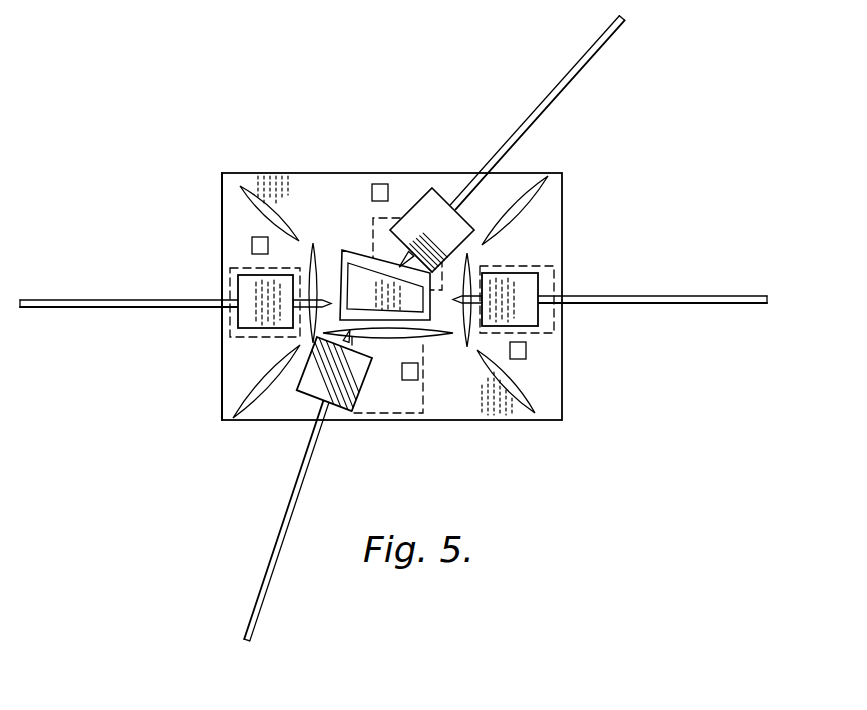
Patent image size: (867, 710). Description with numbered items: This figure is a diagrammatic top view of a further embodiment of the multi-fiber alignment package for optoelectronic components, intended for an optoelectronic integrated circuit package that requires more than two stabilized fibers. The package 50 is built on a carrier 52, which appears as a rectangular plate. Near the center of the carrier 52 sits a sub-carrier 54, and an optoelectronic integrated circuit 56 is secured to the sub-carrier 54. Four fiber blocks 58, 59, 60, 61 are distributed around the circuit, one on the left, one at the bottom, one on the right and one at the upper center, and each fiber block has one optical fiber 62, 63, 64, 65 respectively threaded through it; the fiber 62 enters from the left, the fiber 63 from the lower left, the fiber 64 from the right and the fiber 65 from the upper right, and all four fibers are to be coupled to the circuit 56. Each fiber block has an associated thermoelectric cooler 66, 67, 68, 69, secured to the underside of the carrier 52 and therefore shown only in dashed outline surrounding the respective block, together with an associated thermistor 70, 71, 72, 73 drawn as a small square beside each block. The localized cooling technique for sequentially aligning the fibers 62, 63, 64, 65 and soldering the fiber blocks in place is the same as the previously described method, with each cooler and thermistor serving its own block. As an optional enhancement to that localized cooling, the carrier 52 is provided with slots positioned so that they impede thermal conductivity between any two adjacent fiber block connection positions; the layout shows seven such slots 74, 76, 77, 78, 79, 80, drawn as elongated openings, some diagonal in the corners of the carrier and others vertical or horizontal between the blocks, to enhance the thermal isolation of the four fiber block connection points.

The package 50 is at (310, 156).
The carrier 52 is at (232, 229).
The sub-carrier 54 is at (368, 256).
The optoelectronic integrated circuit 56 is at (346, 262).
The fiber block 58 is at (236, 334).
The fiber block 59 is at (300, 412).
The fiber block 60 is at (540, 313).
The fiber block 61 is at (423, 213).
The optical fiber 62 is at (107, 298).
The optical fiber 63 is at (305, 478).
The optical fiber 64 is at (691, 297).
The optical fiber 65 is at (588, 53).
The thermoelectric cooler 66 is at (228, 318).
The thermoelectric cooler 67 is at (380, 422).
The thermoelectric cooler 68 is at (556, 272).
The thermoelectric cooler 69 is at (413, 216).
The thermistor 70 is at (252, 250).
The thermistor 71 is at (409, 381).
The thermistor 72 is at (526, 351).
The thermistor 73 is at (379, 184).
The slot 74 is at (240, 404).
The slot 76 is at (538, 402).
The slot 77 is at (471, 258).
The slot 78 is at (542, 194).
The slot 79 is at (313, 242).
The slot 80 is at (240, 204).